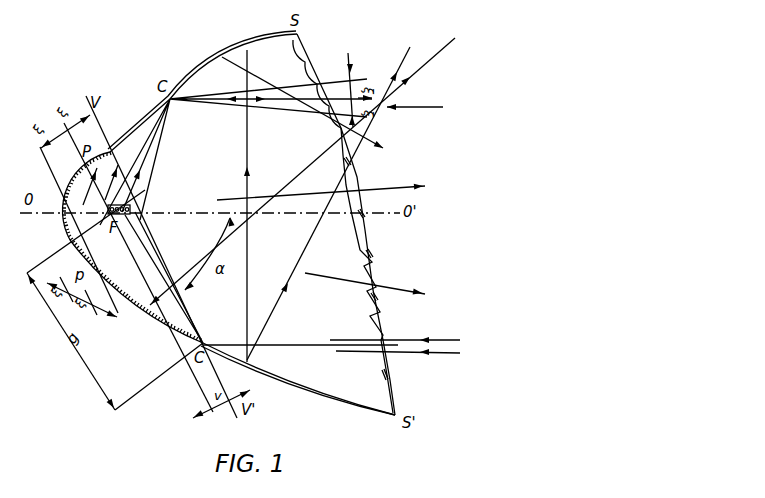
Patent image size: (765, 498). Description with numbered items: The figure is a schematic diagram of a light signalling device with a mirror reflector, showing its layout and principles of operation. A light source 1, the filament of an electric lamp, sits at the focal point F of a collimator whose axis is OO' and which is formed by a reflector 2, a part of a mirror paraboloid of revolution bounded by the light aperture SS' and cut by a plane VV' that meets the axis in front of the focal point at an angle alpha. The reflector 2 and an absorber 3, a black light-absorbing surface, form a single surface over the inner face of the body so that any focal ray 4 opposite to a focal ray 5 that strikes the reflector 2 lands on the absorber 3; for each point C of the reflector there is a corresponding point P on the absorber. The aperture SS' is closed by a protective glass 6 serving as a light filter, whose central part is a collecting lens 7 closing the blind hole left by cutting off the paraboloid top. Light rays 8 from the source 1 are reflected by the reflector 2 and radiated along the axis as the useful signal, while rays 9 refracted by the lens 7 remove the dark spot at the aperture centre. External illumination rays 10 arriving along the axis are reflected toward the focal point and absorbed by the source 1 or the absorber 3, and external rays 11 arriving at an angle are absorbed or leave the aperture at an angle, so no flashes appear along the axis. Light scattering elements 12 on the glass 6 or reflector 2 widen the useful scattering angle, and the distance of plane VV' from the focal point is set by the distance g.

The light source 1 is at (128, 208).
The reflector 2 is at (157, 103).
The absorber 3 is at (167, 327).
The focal ray 4 is at (90, 236).
The focal ray 5 is at (137, 183).
The protective glass 6 is at (386, 378).
The collecting lens 7 is at (384, 275).
The light rays 8 is at (213, 97).
The rays 9 is at (326, 240).
The external illumination rays 10 is at (260, 97).
The external illumination rays 11 is at (303, 192).
The light scattering elements 12 is at (311, 46).